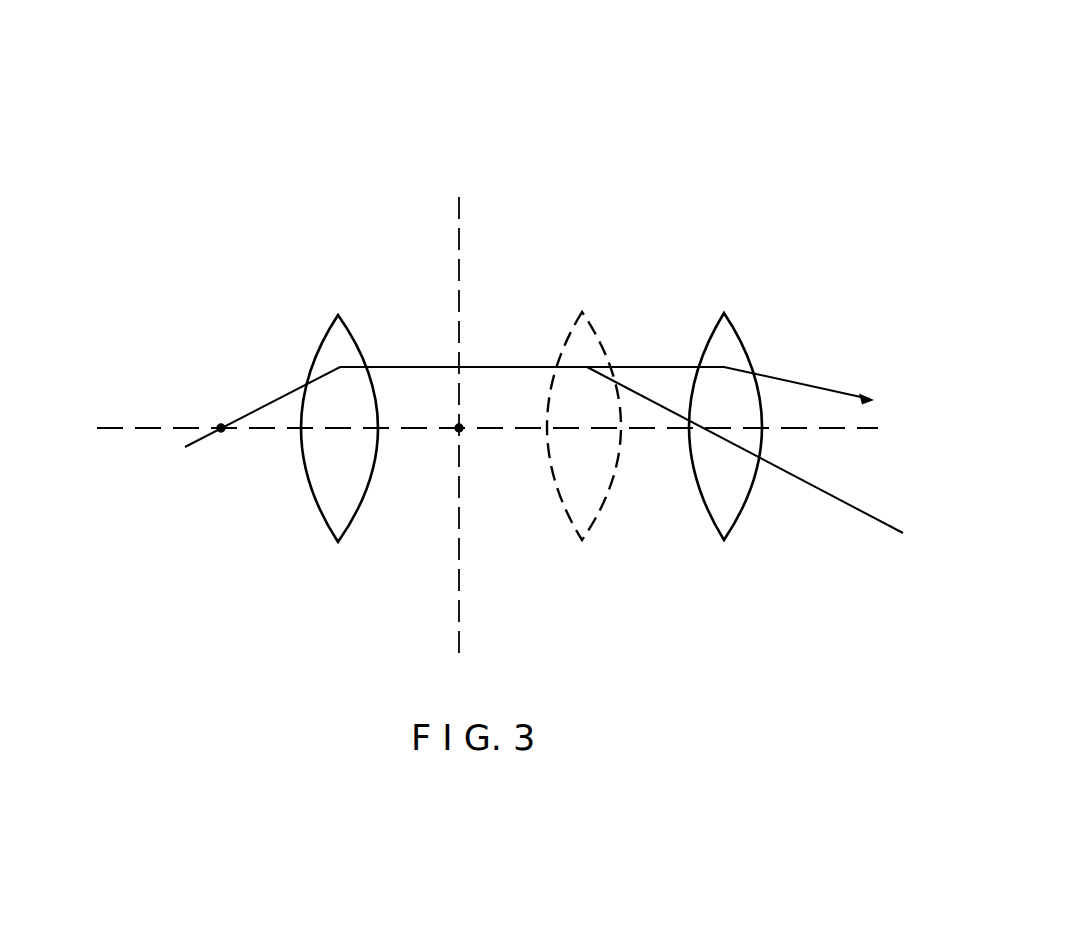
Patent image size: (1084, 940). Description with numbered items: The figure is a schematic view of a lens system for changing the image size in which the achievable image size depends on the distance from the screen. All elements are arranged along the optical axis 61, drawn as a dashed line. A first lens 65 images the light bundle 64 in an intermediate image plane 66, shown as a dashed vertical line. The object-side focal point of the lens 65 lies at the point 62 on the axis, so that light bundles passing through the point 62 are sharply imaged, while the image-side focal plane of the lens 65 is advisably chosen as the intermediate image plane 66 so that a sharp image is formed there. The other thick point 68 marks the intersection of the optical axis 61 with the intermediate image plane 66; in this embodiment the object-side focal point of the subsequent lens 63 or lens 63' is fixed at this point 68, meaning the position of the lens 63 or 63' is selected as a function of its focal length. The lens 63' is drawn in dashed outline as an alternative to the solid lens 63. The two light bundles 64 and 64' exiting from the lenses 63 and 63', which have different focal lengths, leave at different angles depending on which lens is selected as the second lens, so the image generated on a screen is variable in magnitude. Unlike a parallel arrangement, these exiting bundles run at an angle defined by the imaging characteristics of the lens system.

The optical axis 61 is at (152, 428).
The point 62 is at (221, 428).
The lens 63 is at (725, 374).
The lens 63' is at (593, 386).
The light bundle 64 is at (556, 388).
The light bundle 64' is at (745, 480).
The lens 65 is at (345, 496).
The intermediate image plane 66 is at (458, 245).
The point 68 is at (460, 428).